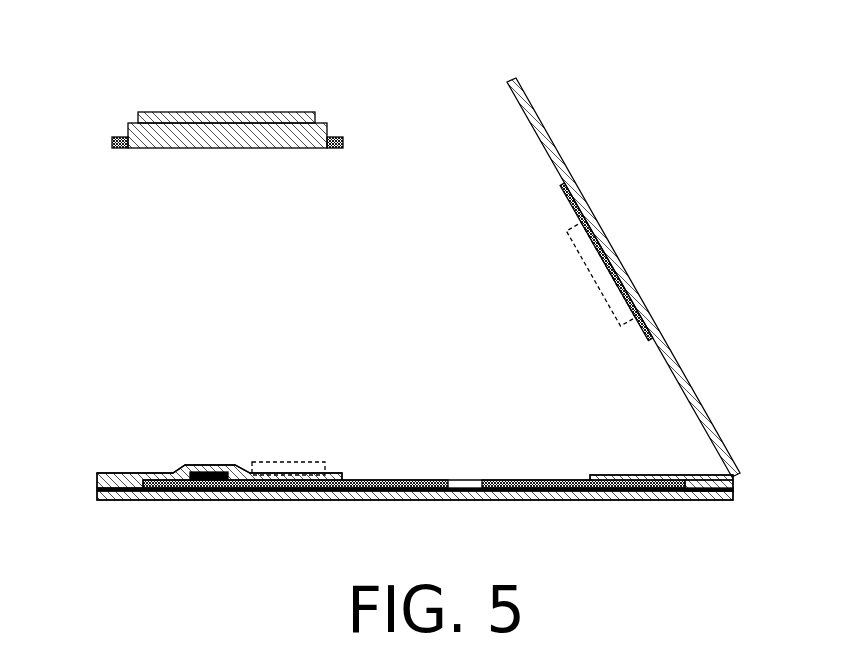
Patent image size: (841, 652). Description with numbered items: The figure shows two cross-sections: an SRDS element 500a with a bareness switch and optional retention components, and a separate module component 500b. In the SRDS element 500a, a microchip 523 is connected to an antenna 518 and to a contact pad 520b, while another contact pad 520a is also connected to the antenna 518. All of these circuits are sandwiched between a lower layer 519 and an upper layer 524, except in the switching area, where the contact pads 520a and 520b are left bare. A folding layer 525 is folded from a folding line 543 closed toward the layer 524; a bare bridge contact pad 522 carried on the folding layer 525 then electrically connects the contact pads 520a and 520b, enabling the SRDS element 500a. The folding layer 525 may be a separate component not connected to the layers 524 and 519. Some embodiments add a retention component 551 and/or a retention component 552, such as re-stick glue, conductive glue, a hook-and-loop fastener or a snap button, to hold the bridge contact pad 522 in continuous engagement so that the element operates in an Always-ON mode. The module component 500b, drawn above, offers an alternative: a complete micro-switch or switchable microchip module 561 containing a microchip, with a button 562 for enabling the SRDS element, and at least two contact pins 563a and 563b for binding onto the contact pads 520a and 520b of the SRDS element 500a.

The SRDS element 500a is at (120, 348).
The module component 500b is at (117, 98).
The antenna 518 is at (145, 482).
The layer 519 is at (707, 503).
The contact pad 520a is at (500, 480).
The contact pad 520b is at (400, 480).
The bridge contact pad 522 is at (563, 198).
The microchip 523 is at (210, 473).
The layer 524 is at (102, 473).
The folding layer 525 is at (677, 365).
The folding line 543 is at (738, 475).
The retention component 551 is at (288, 467).
The retention component 552 is at (597, 270).
The switchable microchip module 561 is at (228, 135).
The button 562 is at (270, 118).
The contact pin 563a is at (340, 150).
The contact pin 563b is at (120, 150).